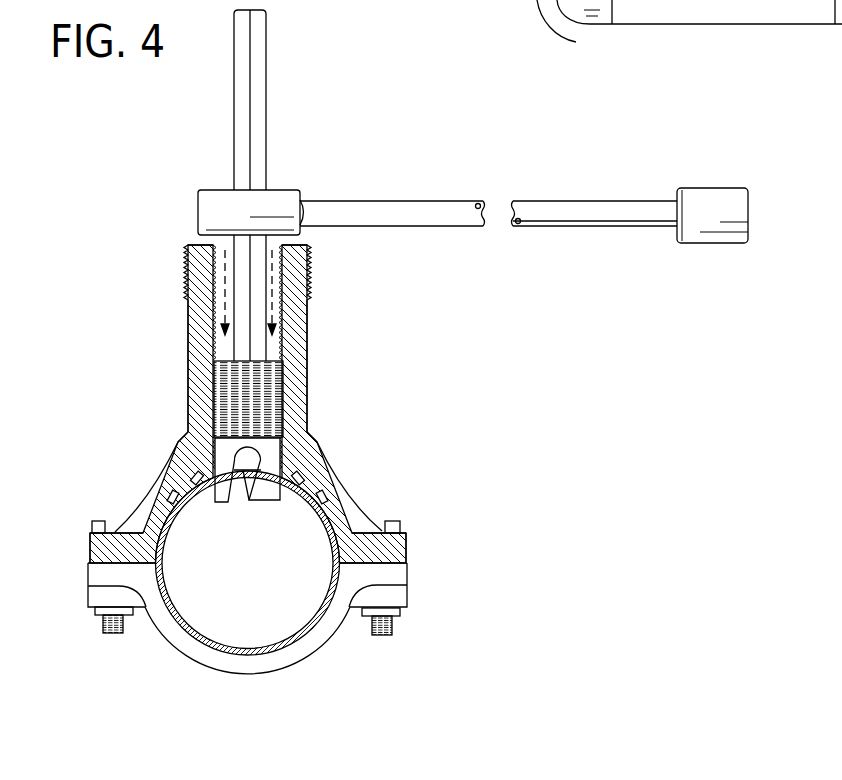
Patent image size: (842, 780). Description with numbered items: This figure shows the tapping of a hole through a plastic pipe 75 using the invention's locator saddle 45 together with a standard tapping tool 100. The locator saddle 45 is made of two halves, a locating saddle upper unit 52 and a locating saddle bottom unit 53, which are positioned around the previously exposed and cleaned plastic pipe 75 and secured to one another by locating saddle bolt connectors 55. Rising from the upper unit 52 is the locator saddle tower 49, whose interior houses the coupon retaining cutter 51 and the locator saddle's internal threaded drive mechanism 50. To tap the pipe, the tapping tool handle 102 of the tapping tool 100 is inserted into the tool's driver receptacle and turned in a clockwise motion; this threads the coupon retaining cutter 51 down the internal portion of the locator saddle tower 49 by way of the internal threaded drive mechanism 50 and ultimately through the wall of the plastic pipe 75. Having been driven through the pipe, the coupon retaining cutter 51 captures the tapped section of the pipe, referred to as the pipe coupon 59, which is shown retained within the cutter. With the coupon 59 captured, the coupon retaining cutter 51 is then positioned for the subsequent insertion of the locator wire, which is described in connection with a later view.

The locator saddle 45 is at (473, 205).
The locator saddle tower 49 is at (298, 348).
The internal threaded drive mechanism 50 is at (268, 412).
The coupon retaining cutter 51 is at (249, 510).
The locating saddle upper unit 52 is at (395, 548).
The locating saddle bottom unit 53 is at (400, 575).
The locating saddle bolt connectors 55 is at (113, 634).
The pipe coupon 59 is at (247, 478).
The plastic pipe 75 is at (278, 621).
The tapping tool 100 is at (600, 223).
The tapping tool handle 102 is at (256, 298).